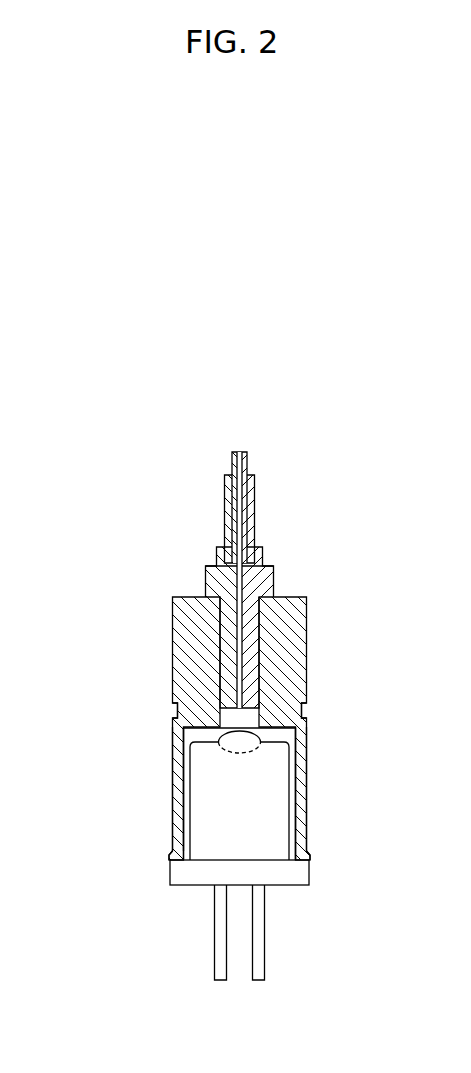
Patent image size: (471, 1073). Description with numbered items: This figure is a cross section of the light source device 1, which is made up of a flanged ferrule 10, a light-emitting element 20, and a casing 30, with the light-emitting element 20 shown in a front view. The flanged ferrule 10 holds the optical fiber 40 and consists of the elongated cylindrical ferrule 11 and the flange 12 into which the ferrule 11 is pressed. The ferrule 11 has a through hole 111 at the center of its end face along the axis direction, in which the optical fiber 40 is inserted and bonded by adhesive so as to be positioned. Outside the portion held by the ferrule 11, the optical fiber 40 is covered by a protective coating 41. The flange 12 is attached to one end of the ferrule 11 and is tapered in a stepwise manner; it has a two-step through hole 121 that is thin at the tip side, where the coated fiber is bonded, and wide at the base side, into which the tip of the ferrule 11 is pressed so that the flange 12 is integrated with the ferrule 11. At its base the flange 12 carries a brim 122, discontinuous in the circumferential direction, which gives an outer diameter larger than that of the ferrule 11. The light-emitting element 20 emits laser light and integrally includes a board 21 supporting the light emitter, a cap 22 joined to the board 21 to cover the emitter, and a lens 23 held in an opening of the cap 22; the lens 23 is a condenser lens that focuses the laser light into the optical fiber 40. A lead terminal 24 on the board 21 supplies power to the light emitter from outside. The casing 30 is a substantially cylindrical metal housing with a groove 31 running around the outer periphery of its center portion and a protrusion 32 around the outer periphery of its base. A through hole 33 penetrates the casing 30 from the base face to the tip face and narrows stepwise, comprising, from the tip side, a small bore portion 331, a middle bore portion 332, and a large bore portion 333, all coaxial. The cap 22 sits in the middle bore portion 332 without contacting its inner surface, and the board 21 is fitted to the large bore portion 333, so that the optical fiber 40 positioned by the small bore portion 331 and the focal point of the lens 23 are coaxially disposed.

The light source device 1 is at (252, 434).
The flanged ferrule 10 is at (123, 488).
The ferrule 11 is at (205, 590).
The through hole 111 is at (246, 666).
The flange 12 is at (224, 508).
The through hole 121 is at (268, 571).
The brim 122 is at (274, 588).
The light-emitting element 20 is at (297, 735).
The board 21 is at (280, 876).
The cap 22 is at (278, 813).
The lens 23 is at (246, 752).
The lead terminal 24 is at (218, 928).
The casing 30 is at (164, 670).
The groove 31 is at (174, 711).
The protrusion 32 is at (168, 866).
The through hole 33 is at (77, 722).
The small bore portion 331 is at (177, 728).
The middle bore portion 332 is at (185, 755).
The large bore portion 333 is at (172, 850).
The optical fiber 40 is at (240, 650).
The coating 41 is at (249, 458).